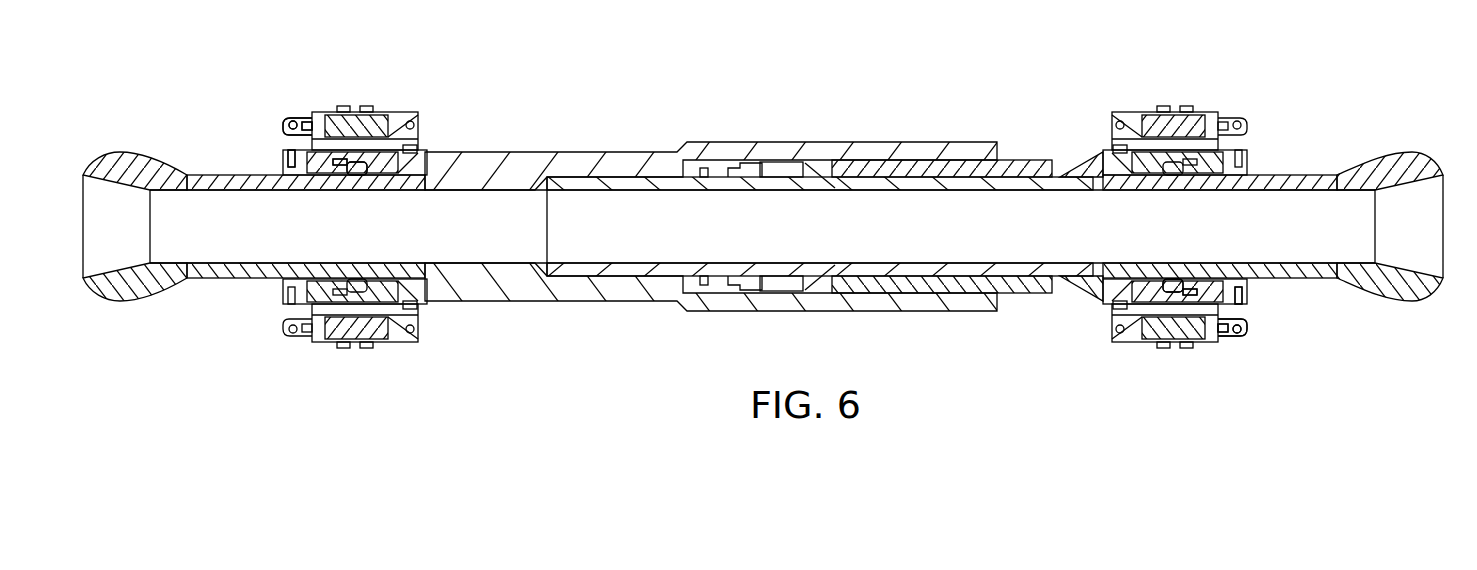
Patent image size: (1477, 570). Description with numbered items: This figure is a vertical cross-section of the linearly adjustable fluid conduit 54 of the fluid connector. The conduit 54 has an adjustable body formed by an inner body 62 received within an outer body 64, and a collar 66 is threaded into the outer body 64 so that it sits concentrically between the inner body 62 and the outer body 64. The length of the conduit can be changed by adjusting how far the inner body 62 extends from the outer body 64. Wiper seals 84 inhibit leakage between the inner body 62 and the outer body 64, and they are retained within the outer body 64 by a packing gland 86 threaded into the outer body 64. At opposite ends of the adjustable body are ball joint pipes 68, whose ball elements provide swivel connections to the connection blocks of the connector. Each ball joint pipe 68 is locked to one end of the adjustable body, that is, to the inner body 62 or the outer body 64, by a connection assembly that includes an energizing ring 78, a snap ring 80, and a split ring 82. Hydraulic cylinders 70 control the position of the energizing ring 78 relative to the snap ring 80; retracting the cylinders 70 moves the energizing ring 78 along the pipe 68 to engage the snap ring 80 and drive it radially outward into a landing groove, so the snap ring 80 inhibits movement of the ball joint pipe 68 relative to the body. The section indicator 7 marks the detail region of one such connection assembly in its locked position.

The conduit 54 is at (248, 33).
The section view indicator 7 is at (215, 116).
The inner body 62 is at (1067, 177).
The outer body 64 is at (548, 152).
The collar 66 is at (1013, 158).
The ball joint pipe 68 is at (138, 152).
The hydraulic cylinder 70 is at (353, 108).
The energizing ring 78 is at (280, 163).
The snap ring 80 is at (340, 163).
The split ring 82 is at (360, 160).
The wiper seal 84 is at (710, 163).
The packing gland 86 is at (738, 163).